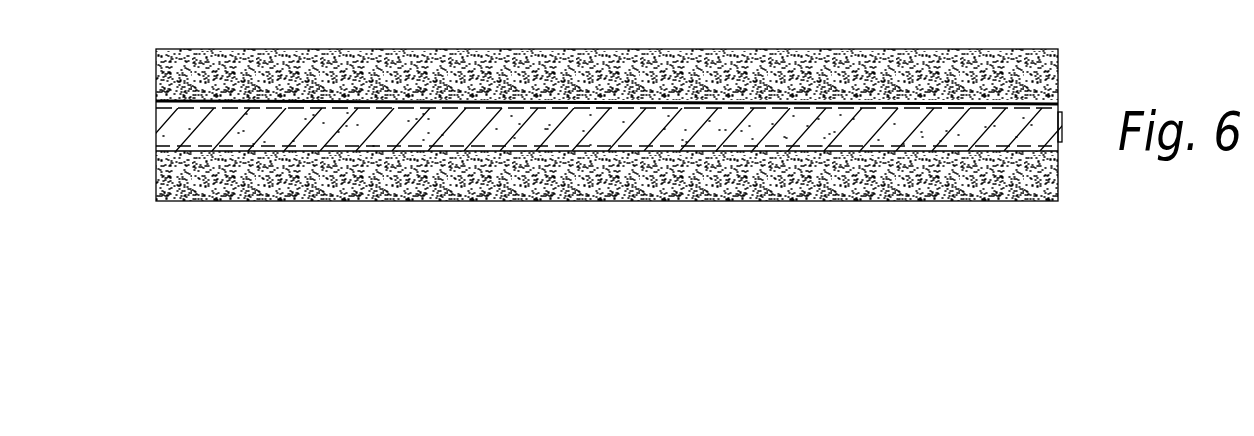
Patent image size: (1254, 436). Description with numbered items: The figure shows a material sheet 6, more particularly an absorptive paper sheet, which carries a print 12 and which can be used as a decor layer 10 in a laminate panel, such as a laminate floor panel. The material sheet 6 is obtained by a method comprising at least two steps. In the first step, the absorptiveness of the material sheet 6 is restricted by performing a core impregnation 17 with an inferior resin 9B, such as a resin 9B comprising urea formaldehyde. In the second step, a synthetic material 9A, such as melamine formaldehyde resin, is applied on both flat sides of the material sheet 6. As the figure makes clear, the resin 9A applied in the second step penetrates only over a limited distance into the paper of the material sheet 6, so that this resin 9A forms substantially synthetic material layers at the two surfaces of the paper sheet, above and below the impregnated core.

The decor layer 10 is at (155, 203).
The print 12 is at (658, 102).
The core impregnation 17 is at (1062, 129).
The synthetic material 9A is at (612, 77).
The inferior resin 9B is at (315, 128).
The material sheet 6 is at (458, 133).